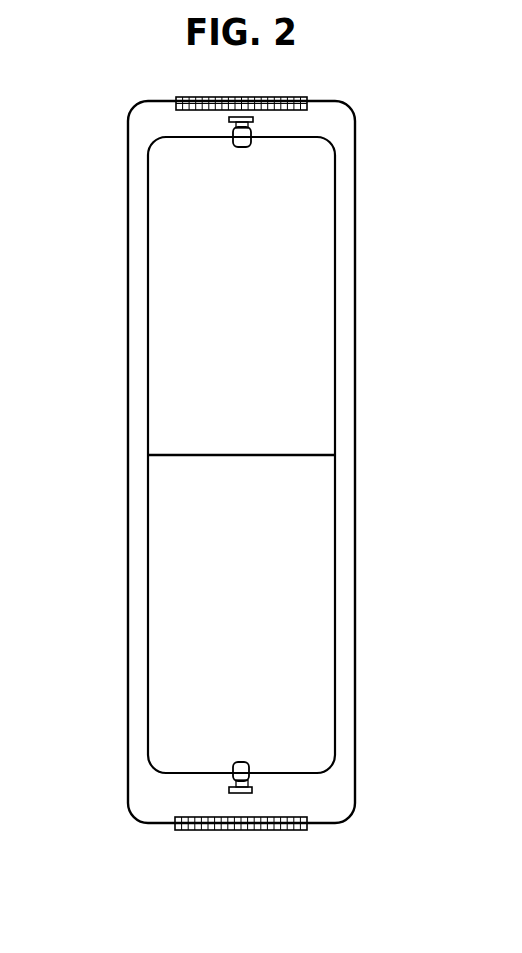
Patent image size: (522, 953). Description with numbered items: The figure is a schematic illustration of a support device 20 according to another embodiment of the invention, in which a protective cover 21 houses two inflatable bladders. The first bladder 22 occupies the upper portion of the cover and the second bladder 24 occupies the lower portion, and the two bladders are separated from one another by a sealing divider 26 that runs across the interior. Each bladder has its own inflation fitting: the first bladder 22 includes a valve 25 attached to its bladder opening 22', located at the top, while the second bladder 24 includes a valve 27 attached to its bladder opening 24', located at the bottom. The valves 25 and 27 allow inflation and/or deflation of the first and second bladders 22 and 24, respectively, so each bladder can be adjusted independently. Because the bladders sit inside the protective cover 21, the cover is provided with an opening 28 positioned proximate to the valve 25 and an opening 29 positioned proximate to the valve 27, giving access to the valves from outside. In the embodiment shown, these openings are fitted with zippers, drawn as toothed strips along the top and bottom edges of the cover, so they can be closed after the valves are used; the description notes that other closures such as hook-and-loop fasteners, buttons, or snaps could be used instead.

The support device 20 is at (135, 81).
The protective cover 21 is at (128, 318).
The first bladder 22 is at (241, 296).
The bladder opening 22' is at (228, 153).
The second bladder 24 is at (241, 614).
The bladder opening 24' is at (282, 816).
The valve 25 is at (254, 118).
The sealing divider 26 is at (303, 453).
The valve 27 is at (253, 791).
The opening 28 is at (283, 97).
The opening 29 is at (258, 831).